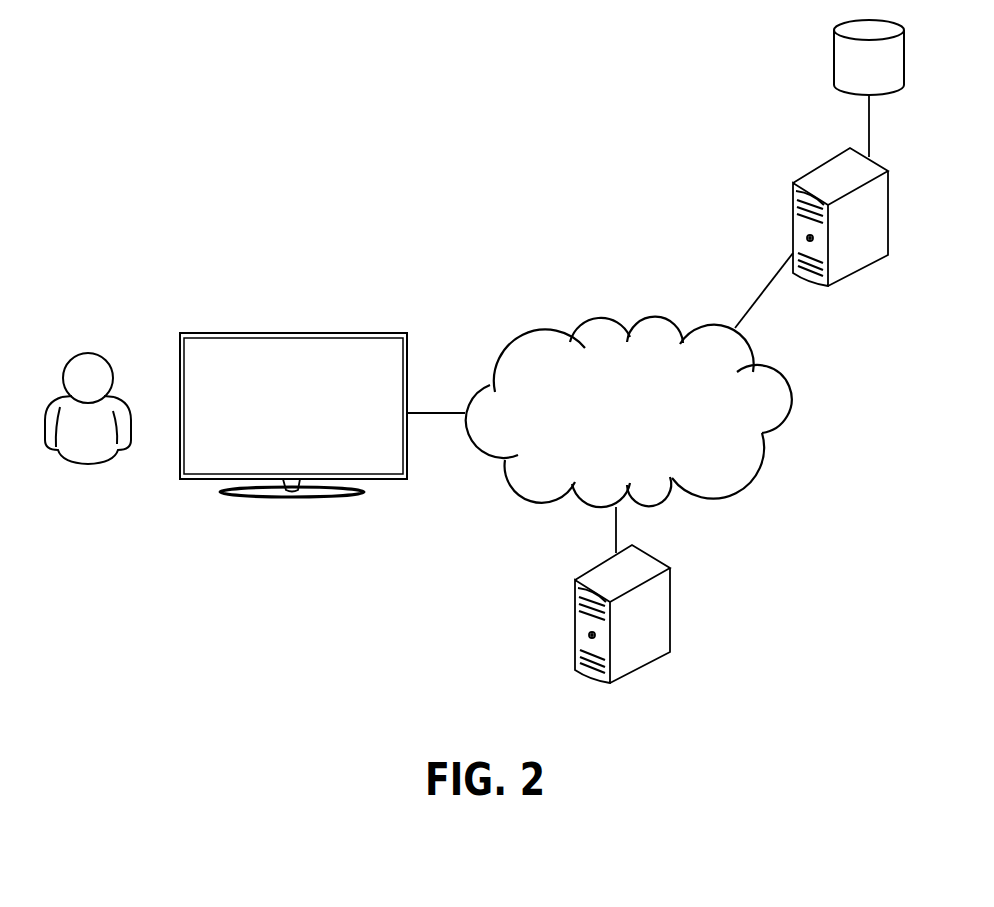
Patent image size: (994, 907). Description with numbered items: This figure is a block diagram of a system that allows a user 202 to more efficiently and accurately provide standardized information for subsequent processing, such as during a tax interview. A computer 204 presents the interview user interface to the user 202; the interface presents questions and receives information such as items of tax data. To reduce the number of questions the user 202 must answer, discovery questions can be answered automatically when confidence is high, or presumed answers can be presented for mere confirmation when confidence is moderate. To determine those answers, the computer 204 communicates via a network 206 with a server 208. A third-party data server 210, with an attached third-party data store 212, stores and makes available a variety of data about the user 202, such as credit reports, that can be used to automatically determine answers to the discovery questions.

The user 202 is at (80, 465).
The computer 204 is at (335, 333).
The network 206 is at (535, 335).
The server 208 is at (670, 613).
The third-party data server 210 is at (793, 215).
The third-party data store 212 is at (832, 62).